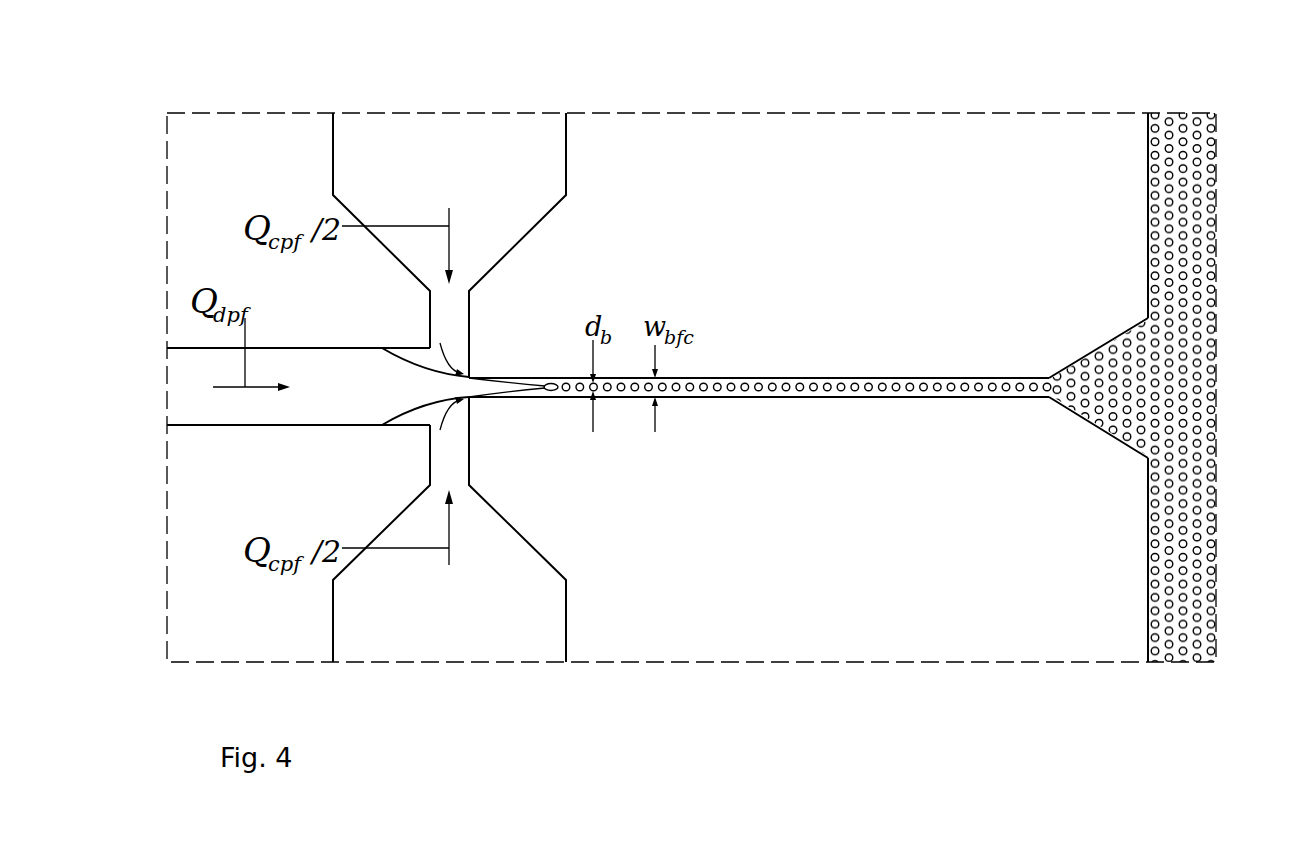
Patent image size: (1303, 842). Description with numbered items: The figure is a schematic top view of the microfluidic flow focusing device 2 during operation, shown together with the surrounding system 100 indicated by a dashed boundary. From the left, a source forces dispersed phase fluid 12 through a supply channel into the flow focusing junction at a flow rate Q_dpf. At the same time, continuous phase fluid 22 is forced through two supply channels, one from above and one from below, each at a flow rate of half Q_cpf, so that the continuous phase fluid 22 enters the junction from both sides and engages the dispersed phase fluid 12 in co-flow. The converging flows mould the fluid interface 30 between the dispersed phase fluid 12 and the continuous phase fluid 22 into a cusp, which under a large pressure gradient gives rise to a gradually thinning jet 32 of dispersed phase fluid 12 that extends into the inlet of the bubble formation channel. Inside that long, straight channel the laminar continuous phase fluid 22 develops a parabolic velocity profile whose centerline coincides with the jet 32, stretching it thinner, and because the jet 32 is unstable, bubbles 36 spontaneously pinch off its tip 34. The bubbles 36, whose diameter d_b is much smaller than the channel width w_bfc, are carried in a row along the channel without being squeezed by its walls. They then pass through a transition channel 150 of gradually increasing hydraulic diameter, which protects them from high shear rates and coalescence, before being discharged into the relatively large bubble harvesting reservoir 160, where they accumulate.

The microfluidic flow focusing device 2 is at (889, 100).
The microfluidic system / chip 100 is at (725, 159).
The dispersed phase fluid 12 is at (333, 398).
The continuous phase fluid 22 is at (461, 180).
The fluid interface 30 is at (421, 366).
The jet 32 is at (468, 387).
The tip 34 is at (552, 374).
The bubbles 36 is at (566, 401).
The transition channel 150 is at (1103, 363).
The bubble harvesting reservoir 160 is at (1162, 588).